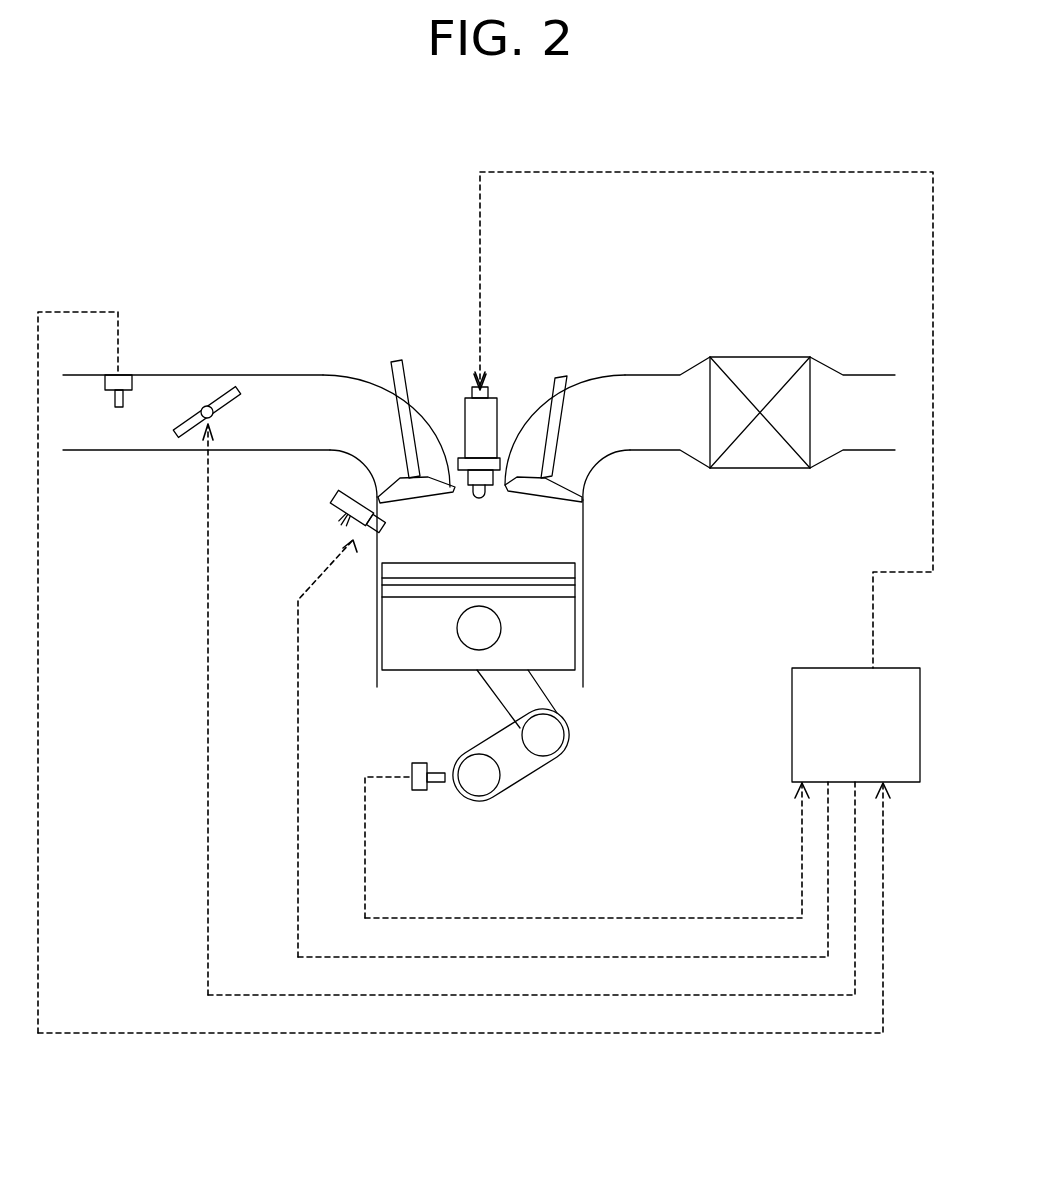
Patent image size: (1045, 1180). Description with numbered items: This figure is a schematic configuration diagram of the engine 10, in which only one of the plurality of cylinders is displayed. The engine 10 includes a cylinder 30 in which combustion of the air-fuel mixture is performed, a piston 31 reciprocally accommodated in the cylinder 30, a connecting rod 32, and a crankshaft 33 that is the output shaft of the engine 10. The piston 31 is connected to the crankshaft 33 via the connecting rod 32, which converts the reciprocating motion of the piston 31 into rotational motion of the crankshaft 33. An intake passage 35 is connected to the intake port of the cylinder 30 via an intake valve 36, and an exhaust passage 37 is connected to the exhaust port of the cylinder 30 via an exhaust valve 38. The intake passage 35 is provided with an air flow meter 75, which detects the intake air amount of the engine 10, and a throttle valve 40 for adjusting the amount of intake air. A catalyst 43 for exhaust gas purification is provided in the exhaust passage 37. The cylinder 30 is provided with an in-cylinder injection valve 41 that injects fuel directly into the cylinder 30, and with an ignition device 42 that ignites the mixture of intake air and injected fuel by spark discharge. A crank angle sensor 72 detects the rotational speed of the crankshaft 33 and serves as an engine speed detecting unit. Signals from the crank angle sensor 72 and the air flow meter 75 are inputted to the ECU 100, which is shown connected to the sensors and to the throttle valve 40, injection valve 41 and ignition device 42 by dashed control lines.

The engine 10 is at (372, 312).
The cylinder 30 is at (498, 542).
The piston 31 is at (397, 628).
The connecting rod 32 is at (550, 697).
The crankshaft 33 is at (470, 768).
The intake passage 35 is at (243, 436).
The intake valve 36 is at (407, 427).
The exhaust passage 37 is at (662, 437).
The exhaust valve 38 is at (562, 425).
The throttle valve 40 is at (193, 438).
The in-cylinder injection valve 41 is at (340, 520).
The ignition device 42 is at (498, 407).
The catalyst 43 is at (760, 462).
The crank angle sensor 72 is at (418, 763).
The air flow meter 75 is at (117, 408).
The ECU 100 is at (792, 720).